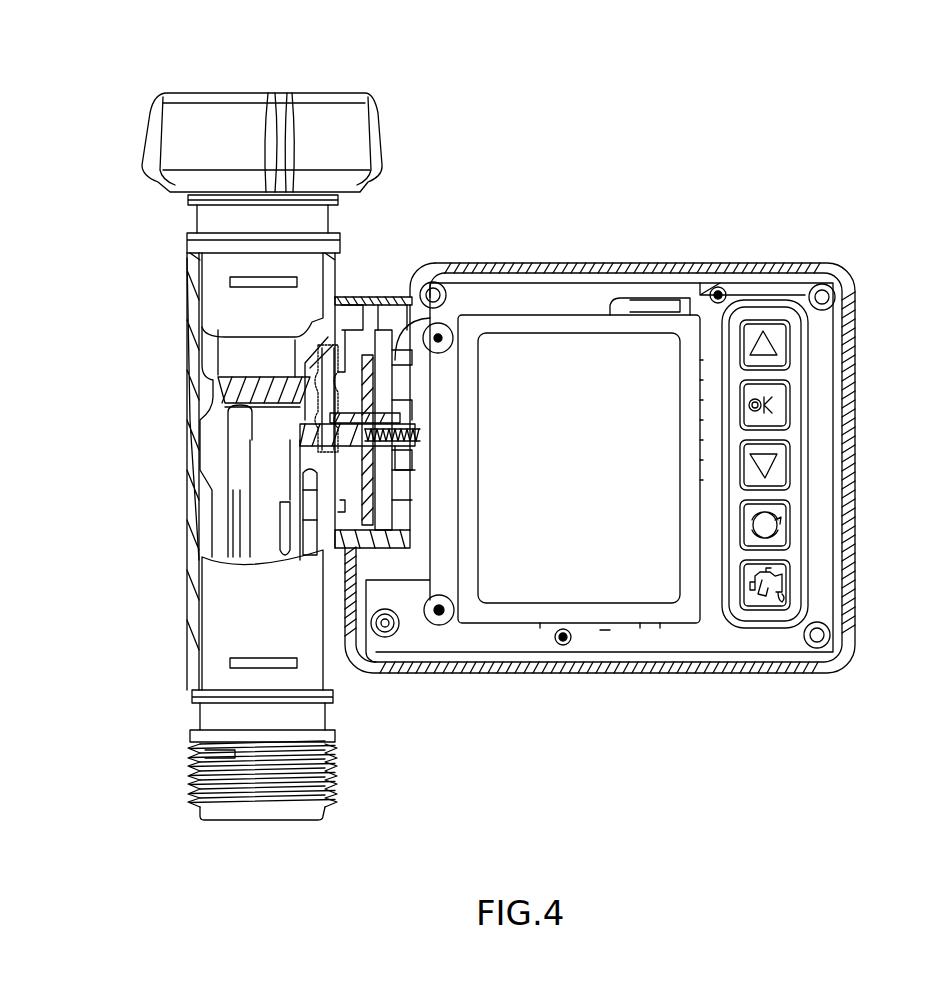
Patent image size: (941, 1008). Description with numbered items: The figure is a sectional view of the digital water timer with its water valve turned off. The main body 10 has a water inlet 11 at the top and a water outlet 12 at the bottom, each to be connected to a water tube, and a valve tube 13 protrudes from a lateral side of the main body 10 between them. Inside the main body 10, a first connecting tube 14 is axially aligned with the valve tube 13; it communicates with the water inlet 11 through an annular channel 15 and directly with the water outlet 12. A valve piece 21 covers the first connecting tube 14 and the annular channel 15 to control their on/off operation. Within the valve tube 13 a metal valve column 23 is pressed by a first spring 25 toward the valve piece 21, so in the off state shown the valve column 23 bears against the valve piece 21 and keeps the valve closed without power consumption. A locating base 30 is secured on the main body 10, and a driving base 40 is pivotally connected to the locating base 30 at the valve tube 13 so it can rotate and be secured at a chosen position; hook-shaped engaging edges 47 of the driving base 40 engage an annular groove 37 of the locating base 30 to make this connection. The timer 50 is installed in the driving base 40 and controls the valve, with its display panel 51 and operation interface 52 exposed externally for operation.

The main body 10 is at (140, 104).
The water inlet 11 is at (303, 92).
The water outlet 12 is at (266, 808).
The valve tube 13 is at (408, 458).
The first connecting tube 14 is at (236, 422).
The annular channel 15 is at (318, 365).
The valve piece 21 is at (300, 560).
The valve column 23 is at (415, 406).
The first spring 25 is at (415, 430).
The locating base 30 is at (185, 575).
The annular groove 37 is at (392, 317).
The driving base 40 is at (843, 262).
The engaging edge 47 is at (368, 305).
The timer 50 is at (585, 316).
The display panel 51 is at (580, 598).
The operation interface 52 is at (790, 457).